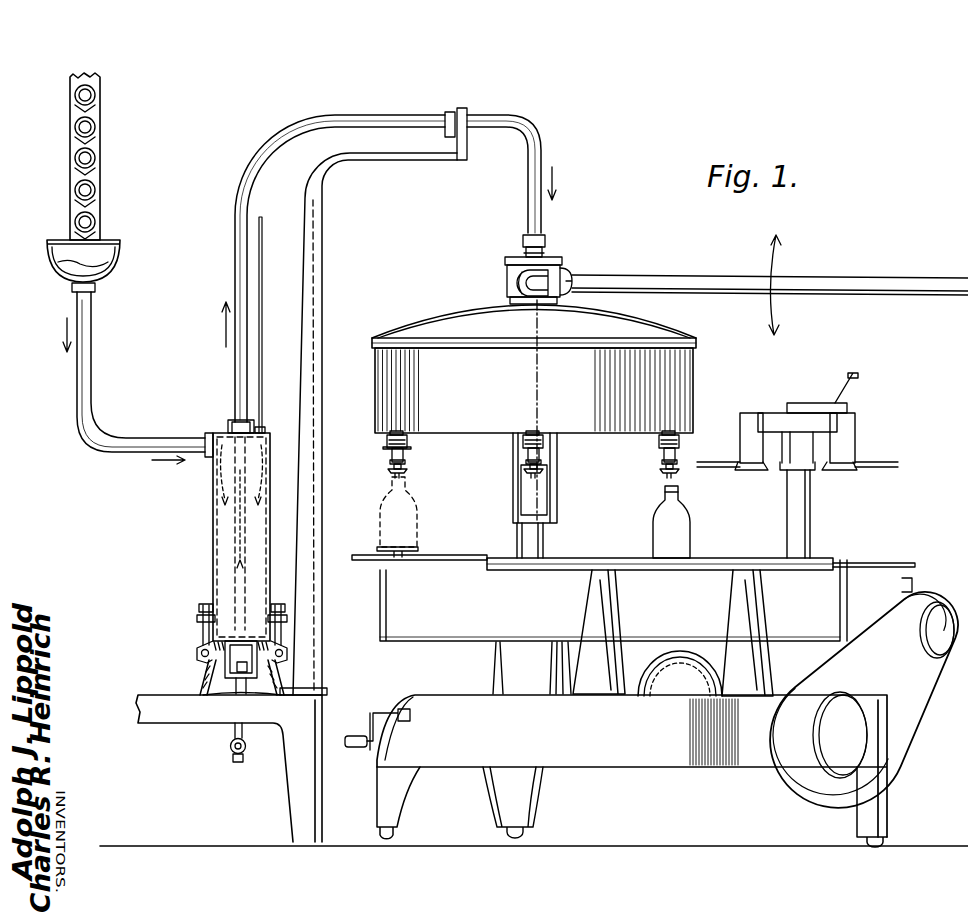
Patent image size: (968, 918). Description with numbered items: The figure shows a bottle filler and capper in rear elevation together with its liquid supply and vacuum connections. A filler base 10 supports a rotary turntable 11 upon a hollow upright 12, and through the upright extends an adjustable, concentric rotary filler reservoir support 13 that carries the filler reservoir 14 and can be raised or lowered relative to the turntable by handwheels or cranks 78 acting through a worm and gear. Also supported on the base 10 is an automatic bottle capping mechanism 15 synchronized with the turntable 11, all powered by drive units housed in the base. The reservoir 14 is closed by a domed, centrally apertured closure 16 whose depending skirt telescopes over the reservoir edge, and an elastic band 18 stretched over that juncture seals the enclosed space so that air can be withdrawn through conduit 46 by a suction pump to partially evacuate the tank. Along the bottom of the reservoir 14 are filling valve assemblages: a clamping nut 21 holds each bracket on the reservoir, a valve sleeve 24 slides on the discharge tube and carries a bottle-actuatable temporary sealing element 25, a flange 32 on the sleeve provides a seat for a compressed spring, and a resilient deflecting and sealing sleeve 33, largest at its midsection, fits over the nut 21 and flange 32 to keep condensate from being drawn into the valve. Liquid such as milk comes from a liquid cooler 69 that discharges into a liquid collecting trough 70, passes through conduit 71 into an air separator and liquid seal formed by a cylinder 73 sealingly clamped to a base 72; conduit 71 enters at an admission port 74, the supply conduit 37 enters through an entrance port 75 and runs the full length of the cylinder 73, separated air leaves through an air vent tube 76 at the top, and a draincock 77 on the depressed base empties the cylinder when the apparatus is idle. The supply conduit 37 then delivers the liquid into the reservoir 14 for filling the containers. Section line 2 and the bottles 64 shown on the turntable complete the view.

The liquid cooler 69 is at (70, 158).
The liquid collecting trough 70 is at (62, 270).
The conduit 71 is at (107, 440).
The base 72 is at (198, 657).
The cylinder 73 is at (213, 532).
The admission port 74 is at (208, 437).
The entrance port 75 is at (236, 422).
The air vent tube 76 is at (258, 252).
The draincock 77 is at (230, 748).
The cranks 78 is at (358, 736).
The supply conduit 37 is at (540, 150).
The conduit 46 is at (817, 282).
The domed closure 16 is at (642, 327).
The elastic band 18 is at (696, 345).
The filler reservoir 14 is at (680, 385).
The section line 2 is at (549, 322).
The clamping nut 21 is at (514, 440).
The temporary sealing element 25 is at (520, 466).
The rotary filler reservoir support 13 is at (545, 528).
The deflecting and sealing sleeve 33 is at (387, 447).
The valve sleeve 24 is at (390, 470).
The flange 32 is at (409, 455).
The bottle 64 is at (410, 510).
The rotary turntable 11 is at (375, 562).
The hollow upright 12 is at (495, 668).
The filler base 10 is at (565, 750).
The automatic bottle capping mechanism 15 is at (853, 447).